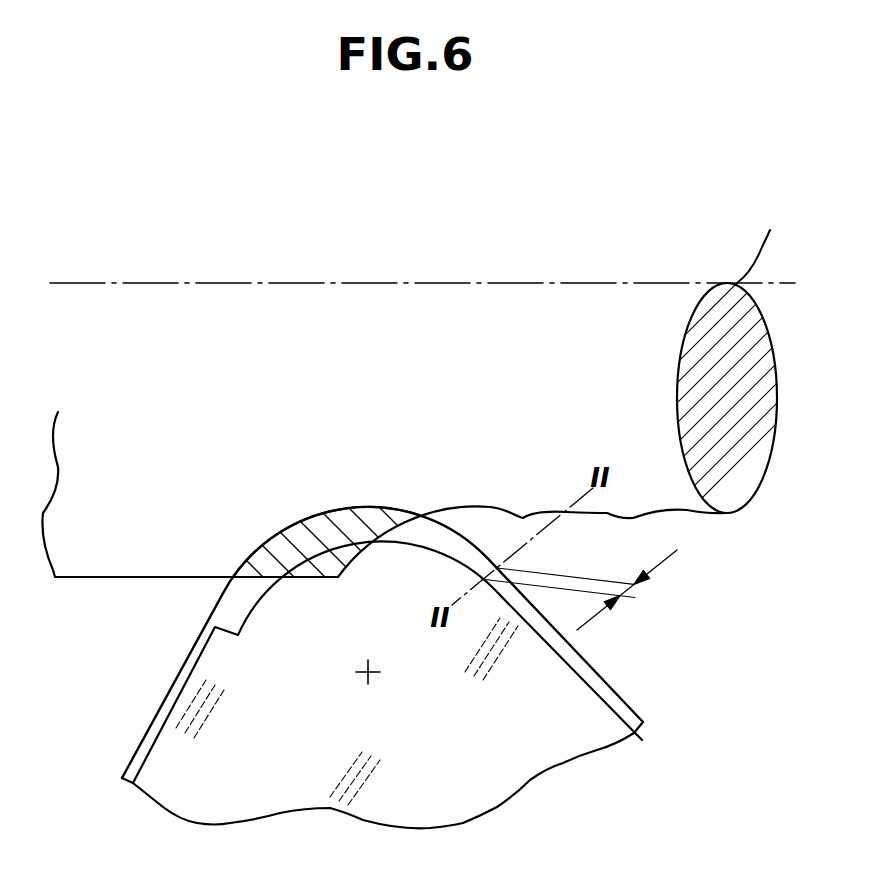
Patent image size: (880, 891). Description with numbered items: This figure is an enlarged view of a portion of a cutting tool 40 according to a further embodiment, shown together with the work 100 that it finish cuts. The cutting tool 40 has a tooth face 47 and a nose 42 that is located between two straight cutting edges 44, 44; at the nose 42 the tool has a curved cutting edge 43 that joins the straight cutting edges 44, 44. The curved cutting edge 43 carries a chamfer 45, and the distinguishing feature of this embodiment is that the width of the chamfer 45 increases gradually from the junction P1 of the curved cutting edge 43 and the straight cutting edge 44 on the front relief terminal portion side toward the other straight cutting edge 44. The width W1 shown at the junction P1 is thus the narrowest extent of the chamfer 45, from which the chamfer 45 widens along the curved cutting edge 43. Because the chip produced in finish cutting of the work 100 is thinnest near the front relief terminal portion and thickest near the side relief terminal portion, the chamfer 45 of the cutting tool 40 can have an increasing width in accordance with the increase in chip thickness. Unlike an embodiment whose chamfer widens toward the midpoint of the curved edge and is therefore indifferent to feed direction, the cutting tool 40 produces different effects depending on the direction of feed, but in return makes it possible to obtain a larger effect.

The work 100 is at (658, 270).
The cutting tool 40 is at (378, 696).
The nose 42 is at (246, 520).
The curved cutting edge 43 is at (305, 514).
The straight cutting edge 44 is at (143, 733).
The chamfer 45 is at (238, 605).
The tooth face 47 is at (237, 738).
The junction P1 is at (497, 567).
The edge width W1 is at (591, 590).